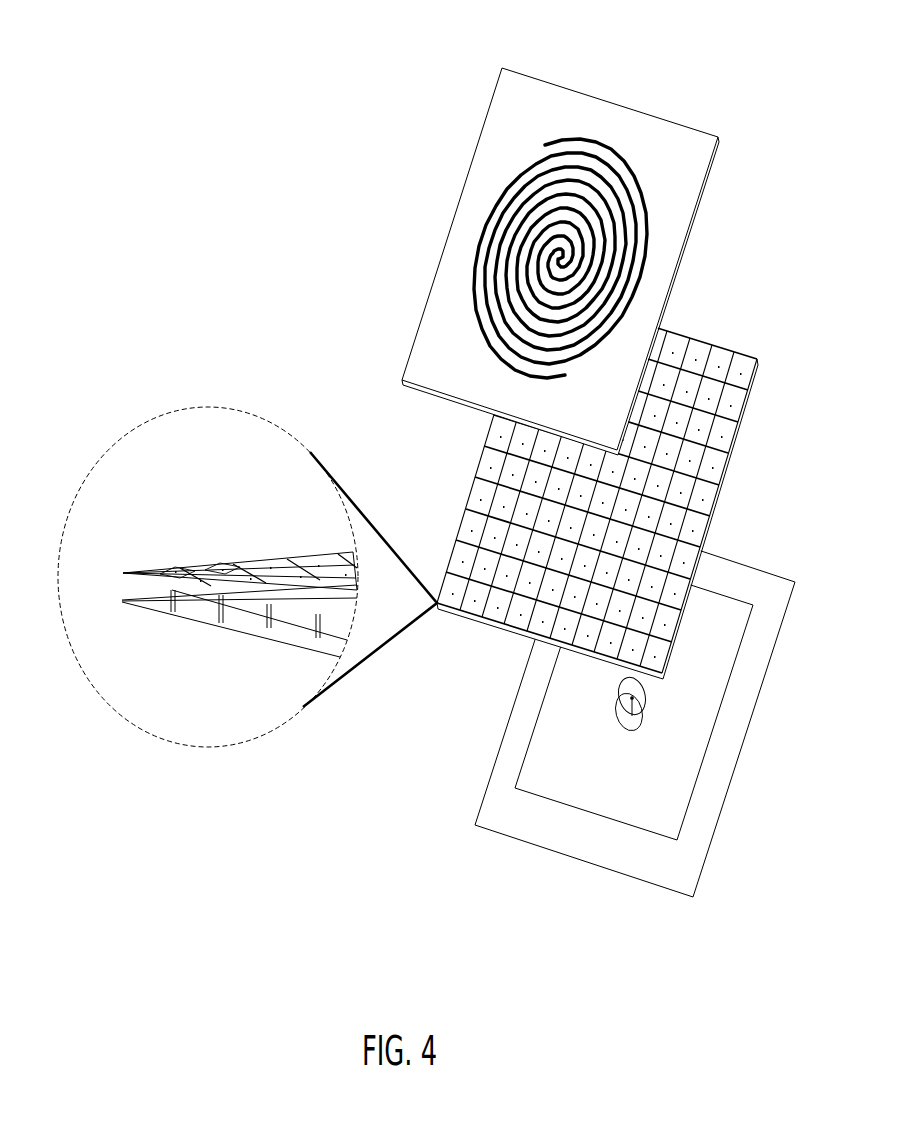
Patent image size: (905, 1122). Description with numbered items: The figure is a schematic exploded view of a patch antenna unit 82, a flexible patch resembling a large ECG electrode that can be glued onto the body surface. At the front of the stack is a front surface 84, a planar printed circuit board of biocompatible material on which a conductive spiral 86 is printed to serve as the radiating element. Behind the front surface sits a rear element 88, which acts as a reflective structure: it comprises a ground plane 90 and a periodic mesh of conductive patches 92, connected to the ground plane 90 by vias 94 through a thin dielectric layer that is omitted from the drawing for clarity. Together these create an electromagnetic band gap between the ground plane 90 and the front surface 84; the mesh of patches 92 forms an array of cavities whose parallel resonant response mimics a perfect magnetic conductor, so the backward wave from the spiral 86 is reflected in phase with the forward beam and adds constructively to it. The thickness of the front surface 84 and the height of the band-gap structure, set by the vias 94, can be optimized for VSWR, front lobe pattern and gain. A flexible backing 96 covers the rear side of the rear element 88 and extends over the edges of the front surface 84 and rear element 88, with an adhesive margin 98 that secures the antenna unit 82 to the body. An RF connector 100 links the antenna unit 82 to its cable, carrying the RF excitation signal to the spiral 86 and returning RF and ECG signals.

The patch antenna unit 82 is at (318, 140).
The front surface 84 is at (647, 113).
The conductive spiral 86 is at (565, 140).
The rear element 88 is at (722, 348).
The ground plane 90 is at (287, 638).
The conductive patches 92 is at (203, 585).
The vias 94 is at (182, 600).
The flexible backing 96 is at (602, 866).
The adhesive margin 98 is at (500, 784).
The RF connector 100 is at (646, 707).